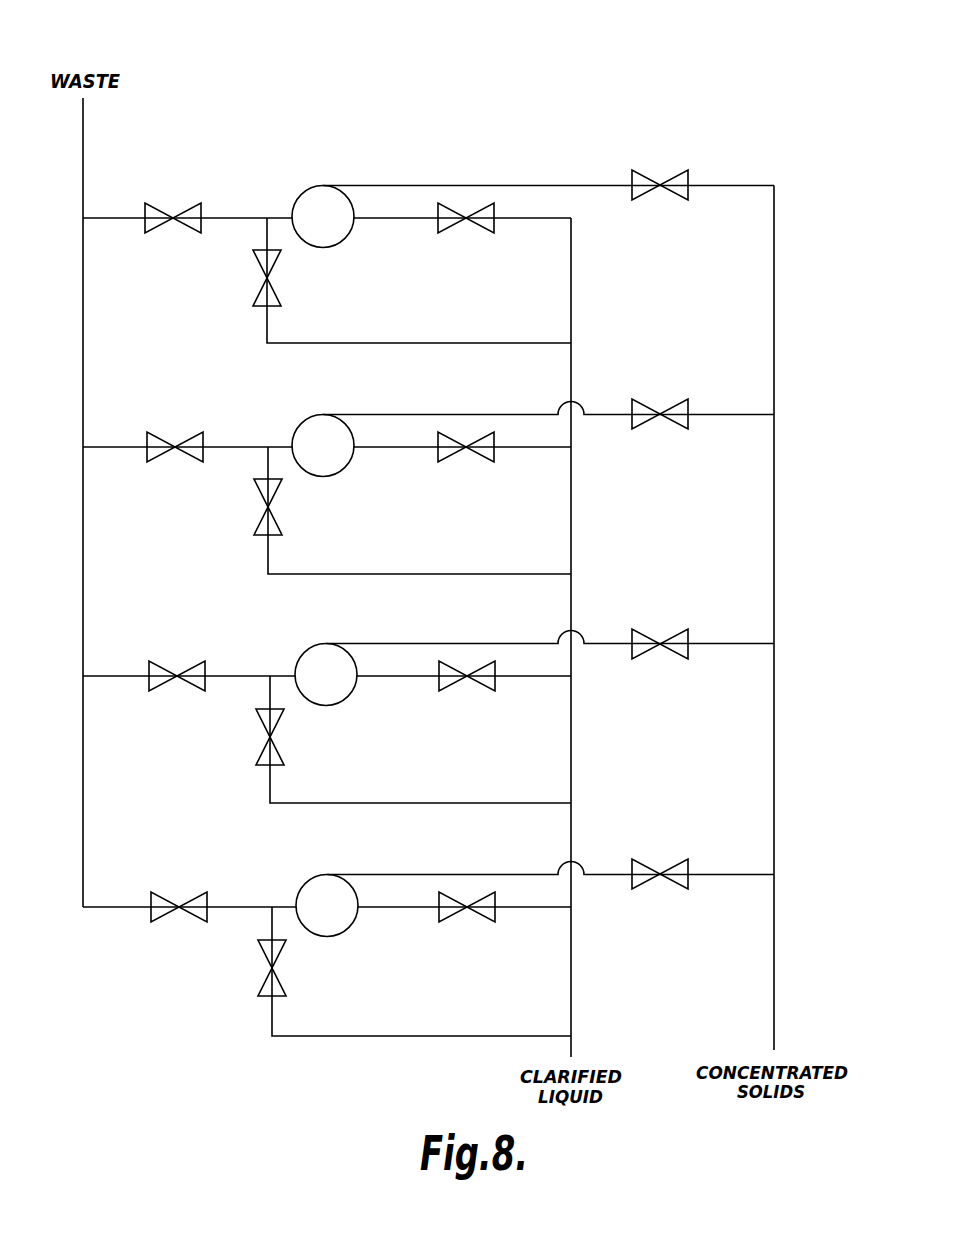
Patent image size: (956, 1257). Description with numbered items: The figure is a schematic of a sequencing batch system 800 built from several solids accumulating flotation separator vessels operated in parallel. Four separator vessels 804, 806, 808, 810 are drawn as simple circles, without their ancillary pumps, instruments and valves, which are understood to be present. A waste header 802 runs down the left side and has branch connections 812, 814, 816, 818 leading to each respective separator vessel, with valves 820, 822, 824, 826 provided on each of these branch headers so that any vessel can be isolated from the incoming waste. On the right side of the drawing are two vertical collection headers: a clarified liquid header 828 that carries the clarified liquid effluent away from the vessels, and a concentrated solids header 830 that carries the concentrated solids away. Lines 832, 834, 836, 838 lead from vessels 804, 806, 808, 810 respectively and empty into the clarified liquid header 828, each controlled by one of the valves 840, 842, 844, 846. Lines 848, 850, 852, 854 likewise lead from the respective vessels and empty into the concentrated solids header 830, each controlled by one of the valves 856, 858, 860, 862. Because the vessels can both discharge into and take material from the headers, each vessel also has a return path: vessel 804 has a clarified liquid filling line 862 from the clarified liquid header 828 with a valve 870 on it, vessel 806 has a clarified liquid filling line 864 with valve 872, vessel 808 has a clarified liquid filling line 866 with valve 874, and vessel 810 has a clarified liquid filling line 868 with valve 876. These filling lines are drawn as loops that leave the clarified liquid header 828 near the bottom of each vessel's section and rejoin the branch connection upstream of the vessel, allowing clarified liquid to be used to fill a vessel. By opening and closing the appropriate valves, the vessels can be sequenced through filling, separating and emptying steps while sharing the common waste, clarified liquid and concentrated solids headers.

The system 800 is at (470, 72).
The waste header 802 is at (83, 122).
The separator vessel 804 is at (302, 192).
The separator vessel 806 is at (302, 422).
The separator vessel 808 is at (304, 652).
The separator vessel 810 is at (304, 884).
The branch connection 812 is at (232, 216).
The branch connection 814 is at (238, 445).
The branch connection 816 is at (240, 674).
The branch connection 818 is at (241, 905).
The valve 820 is at (172, 203).
The valve 822 is at (174, 432).
The valve 824 is at (176, 661).
The valve 826 is at (178, 892).
The clarified liquid header 828 is at (571, 972).
The concentrated solids header 830 is at (774, 972).
The line 832 is at (388, 222).
The line 834 is at (378, 451).
The line 836 is at (378, 680).
The line 838 is at (378, 911).
The valve 840 is at (488, 233).
The valve 842 is at (478, 462).
The valve 844 is at (476, 691).
The valve 846 is at (476, 922).
The line 848 is at (580, 185).
The line 850 is at (598, 414).
The line 852 is at (598, 643).
The line 854 is at (600, 874).
The valve 856 is at (690, 187).
The valve 858 is at (690, 415).
The valve 860 is at (690, 644).
The valve 862 is at (455, 343).
The clarified liquid filling line 864 is at (455, 574).
The clarified liquid filling line 866 is at (452, 803).
The clarified liquid filling line 868 is at (392, 1036).
The valve 870 is at (262, 290).
The valve 872 is at (262, 519).
The valve 874 is at (264, 748).
The valve 876 is at (264, 978).